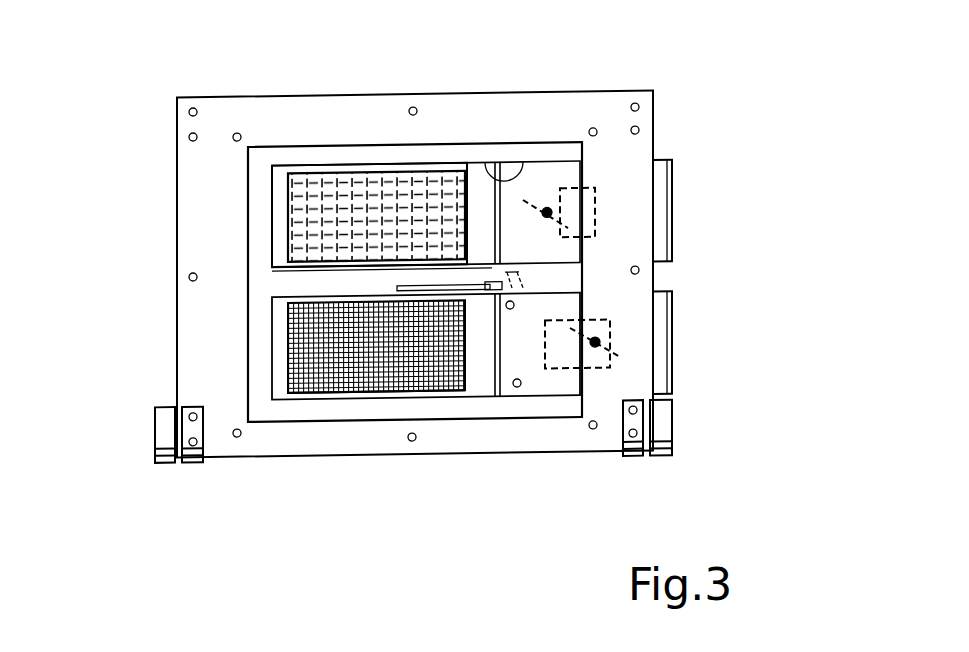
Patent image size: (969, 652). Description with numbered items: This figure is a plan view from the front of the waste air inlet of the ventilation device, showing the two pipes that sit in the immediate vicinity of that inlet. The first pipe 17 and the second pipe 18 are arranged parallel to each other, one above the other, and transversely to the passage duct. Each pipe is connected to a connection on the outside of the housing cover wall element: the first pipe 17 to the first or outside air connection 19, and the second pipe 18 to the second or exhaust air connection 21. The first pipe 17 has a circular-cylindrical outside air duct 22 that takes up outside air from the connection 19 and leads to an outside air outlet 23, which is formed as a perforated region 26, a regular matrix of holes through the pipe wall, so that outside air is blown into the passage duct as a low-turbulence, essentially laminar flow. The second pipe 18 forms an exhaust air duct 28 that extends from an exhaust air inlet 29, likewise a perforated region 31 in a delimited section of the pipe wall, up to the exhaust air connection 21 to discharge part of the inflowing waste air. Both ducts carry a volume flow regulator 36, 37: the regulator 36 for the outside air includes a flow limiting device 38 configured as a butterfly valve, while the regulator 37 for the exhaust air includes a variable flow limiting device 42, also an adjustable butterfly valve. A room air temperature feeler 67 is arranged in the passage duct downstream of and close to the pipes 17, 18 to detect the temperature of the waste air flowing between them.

The first pipe 17 is at (285, 165).
The second pipe 18 is at (272, 398).
The first connection 19 is at (660, 165).
The second connection 21 is at (658, 373).
The outside air duct 22 is at (518, 168).
The outside air outlet 23 is at (422, 185).
The perforated region 26 is at (315, 223).
The exhaust air duct 28 is at (465, 397).
The exhaust air inlet 29 is at (340, 400).
The perforated region 31 is at (313, 342).
The volume flow regulator 36 is at (590, 168).
The volume flow regulator 37 is at (568, 383).
The flow limiting device 38 is at (563, 222).
The variable flow limiting device 42 is at (600, 348).
The room air temperature feeler 67 is at (485, 280).